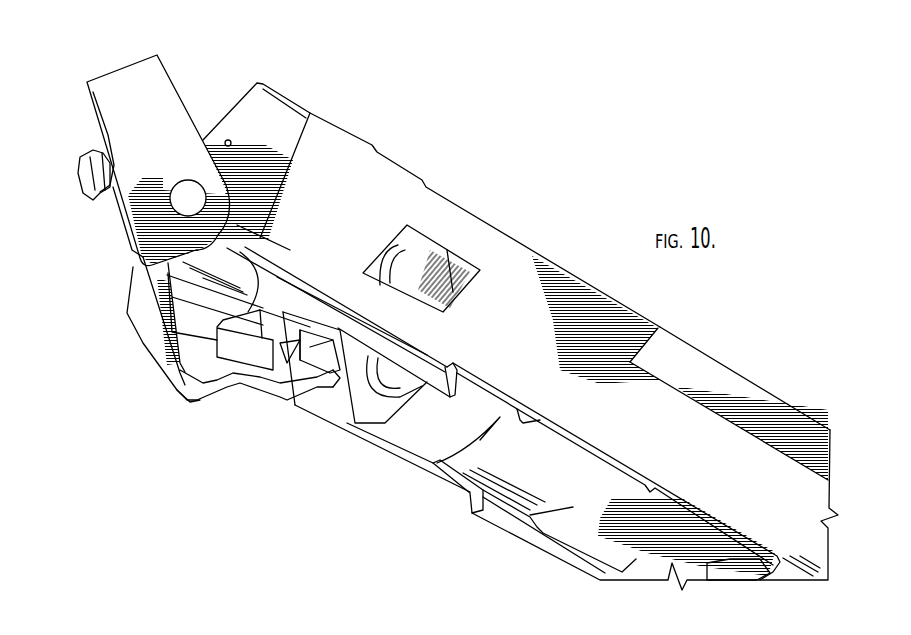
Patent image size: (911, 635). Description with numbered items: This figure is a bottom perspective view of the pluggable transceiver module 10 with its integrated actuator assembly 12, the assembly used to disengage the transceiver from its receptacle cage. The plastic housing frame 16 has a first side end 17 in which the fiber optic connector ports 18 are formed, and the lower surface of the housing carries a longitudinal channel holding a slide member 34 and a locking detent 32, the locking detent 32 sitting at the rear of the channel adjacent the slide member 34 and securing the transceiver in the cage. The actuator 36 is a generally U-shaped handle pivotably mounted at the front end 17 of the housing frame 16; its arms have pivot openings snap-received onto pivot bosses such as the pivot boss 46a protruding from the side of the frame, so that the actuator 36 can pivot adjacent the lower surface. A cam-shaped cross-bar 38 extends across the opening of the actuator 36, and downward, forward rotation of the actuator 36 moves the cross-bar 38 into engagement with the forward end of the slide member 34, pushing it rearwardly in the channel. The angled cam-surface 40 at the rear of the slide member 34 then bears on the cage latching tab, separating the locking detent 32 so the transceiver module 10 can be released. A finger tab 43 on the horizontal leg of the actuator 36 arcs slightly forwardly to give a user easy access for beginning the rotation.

The pluggable transceiver module 10 is at (557, 212).
The actuator assembly 12 is at (163, 433).
The housing frame 16 is at (613, 325).
The first side end 17 is at (330, 143).
The fiber optic connector ports 18 is at (267, 113).
The locking detent 32 is at (318, 377).
The slide member 34 is at (208, 347).
The actuator 36 is at (160, 100).
The cross-bar 38 is at (160, 318).
The angled cam-surface 40 is at (250, 362).
The finger tab 43 is at (80, 183).
The pivot boss 46a is at (172, 197).